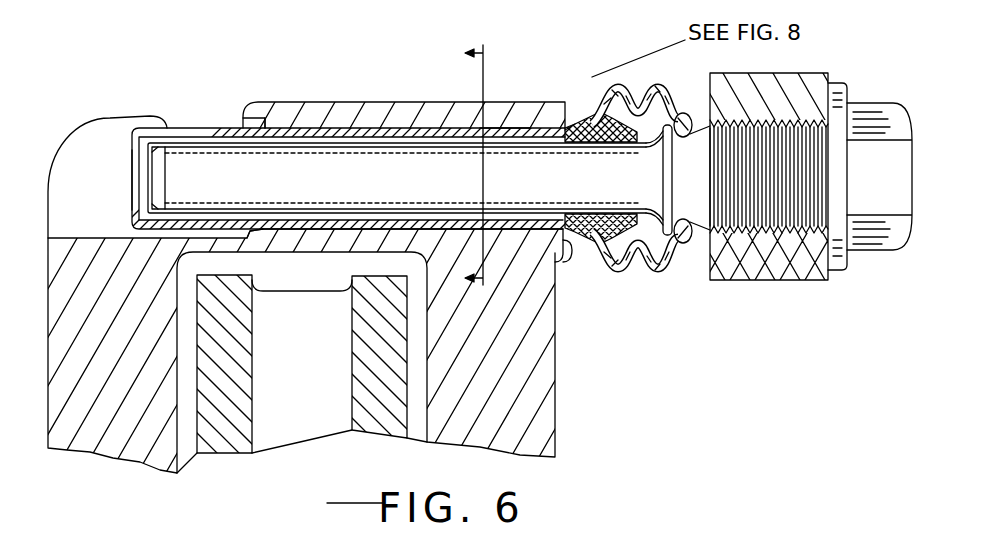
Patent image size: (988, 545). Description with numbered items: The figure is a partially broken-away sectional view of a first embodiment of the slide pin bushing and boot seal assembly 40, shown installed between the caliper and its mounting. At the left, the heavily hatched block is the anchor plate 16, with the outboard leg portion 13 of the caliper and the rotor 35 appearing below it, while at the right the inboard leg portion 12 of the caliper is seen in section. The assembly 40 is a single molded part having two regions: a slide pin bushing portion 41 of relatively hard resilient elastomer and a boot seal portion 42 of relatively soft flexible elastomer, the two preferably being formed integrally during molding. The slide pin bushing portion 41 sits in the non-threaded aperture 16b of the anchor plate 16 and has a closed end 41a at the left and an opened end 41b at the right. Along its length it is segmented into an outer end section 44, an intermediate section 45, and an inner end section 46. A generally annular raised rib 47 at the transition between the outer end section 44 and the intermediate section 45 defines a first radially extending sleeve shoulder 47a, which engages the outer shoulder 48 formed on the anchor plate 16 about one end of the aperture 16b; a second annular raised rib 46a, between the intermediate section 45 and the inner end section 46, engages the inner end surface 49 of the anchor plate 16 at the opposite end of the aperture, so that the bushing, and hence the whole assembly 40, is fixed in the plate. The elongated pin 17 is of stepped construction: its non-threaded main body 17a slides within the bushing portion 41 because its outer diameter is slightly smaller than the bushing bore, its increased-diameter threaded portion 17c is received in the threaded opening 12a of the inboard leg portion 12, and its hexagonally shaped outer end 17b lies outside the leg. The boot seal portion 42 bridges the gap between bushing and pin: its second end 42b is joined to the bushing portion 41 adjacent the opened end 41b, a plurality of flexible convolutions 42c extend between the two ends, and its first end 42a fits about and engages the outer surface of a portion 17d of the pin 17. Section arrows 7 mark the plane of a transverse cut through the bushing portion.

The outboard leg portion 13 is at (48, 448).
The rotor 35 is at (335, 440).
The outer end section 44 is at (118, 128).
The anchor plate 16 is at (410, 108).
The raised rib 47 is at (247, 122).
The first sleeve shoulder 47a is at (275, 127).
The intermediate section 45 is at (507, 128).
The non-threaded main body 17a is at (190, 163).
The slide pin bushing portion 41 is at (355, 128).
The closed end 41a is at (130, 187).
The opened end 41b is at (647, 203).
The non-threaded aperture 16b is at (315, 135).
The outer shoulder 48 is at (257, 240).
The inner end section 46 is at (579, 108).
The raised rib 46a is at (560, 120).
The second end 42b is at (600, 250).
The flexible convolutions 42c is at (620, 88).
The boot seal portion 42 is at (635, 275).
The first end 42a is at (679, 255).
The slide pin bushing and boot seal assembly 40 is at (585, 258).
The inner end surface 49 is at (566, 252).
The pin portion 17d is at (697, 135).
The inboard leg portion 12 is at (835, 280).
The threaded opening 12a is at (733, 282).
The threaded portion 17c is at (767, 262).
The pin 17 is at (903, 250).
The hexagonally shaped outer end 17b is at (877, 113).
The section line 7- 7 is at (463, 168).